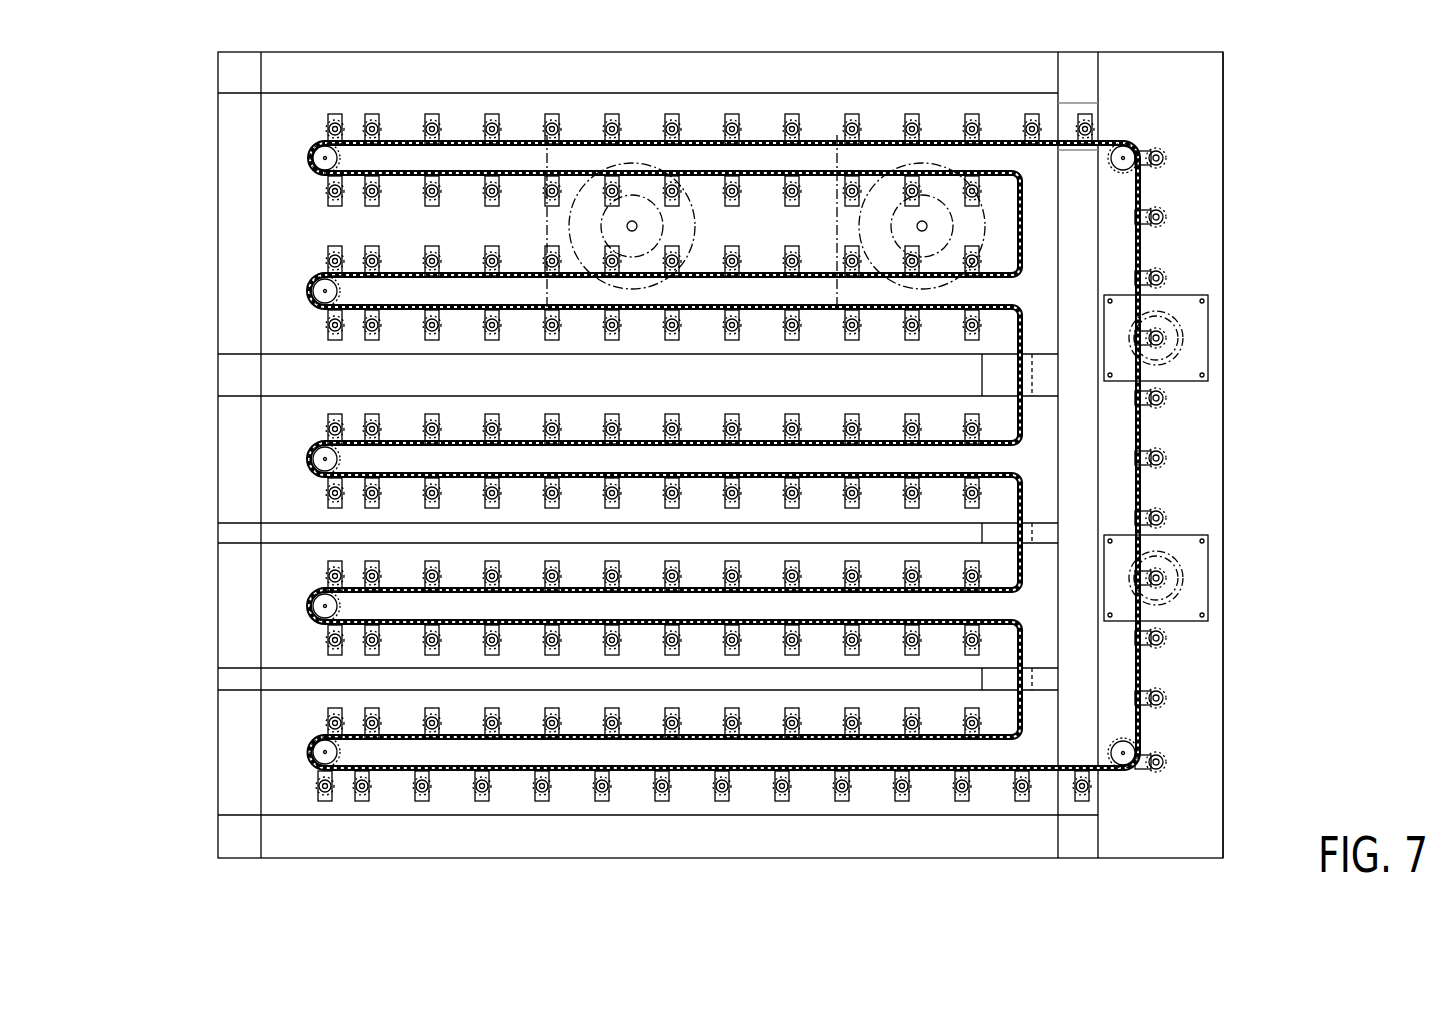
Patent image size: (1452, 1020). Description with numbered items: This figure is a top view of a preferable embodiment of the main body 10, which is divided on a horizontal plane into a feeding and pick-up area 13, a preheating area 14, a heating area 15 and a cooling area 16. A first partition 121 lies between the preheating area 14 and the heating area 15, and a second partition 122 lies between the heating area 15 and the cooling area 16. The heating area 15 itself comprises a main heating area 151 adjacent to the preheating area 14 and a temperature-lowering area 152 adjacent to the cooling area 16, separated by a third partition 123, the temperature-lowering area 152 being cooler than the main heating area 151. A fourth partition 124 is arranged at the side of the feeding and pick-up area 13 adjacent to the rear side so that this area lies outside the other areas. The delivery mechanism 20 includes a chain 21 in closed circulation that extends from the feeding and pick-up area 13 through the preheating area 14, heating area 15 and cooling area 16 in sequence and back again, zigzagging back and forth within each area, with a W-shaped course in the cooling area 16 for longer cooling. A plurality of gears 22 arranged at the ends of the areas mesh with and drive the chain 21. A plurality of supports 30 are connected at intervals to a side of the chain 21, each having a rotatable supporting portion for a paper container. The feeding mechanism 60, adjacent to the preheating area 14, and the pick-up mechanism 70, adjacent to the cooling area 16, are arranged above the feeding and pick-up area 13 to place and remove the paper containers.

The main body 10 is at (190, 120).
The feeding and pick-up area 13 is at (1195, 660).
The preheating area 14 is at (275, 755).
The heating area 15 is at (605, 455).
The main heating area 151 is at (287, 593).
The temperature-lowering area 152 is at (282, 481).
The cooling area 16 is at (270, 201).
The delivery mechanism 20 is at (1218, 430).
The chain 21 is at (1075, 142).
The gear 22 is at (1133, 152).
The support 30 is at (1165, 397).
The feeding mechanism 60 is at (1192, 548).
The pick-up mechanism 70 is at (1198, 342).
The first partition 121 is at (378, 682).
The second partition 122 is at (303, 365).
The third partition 123 is at (415, 530).
The fourth partition 124 is at (1082, 707).